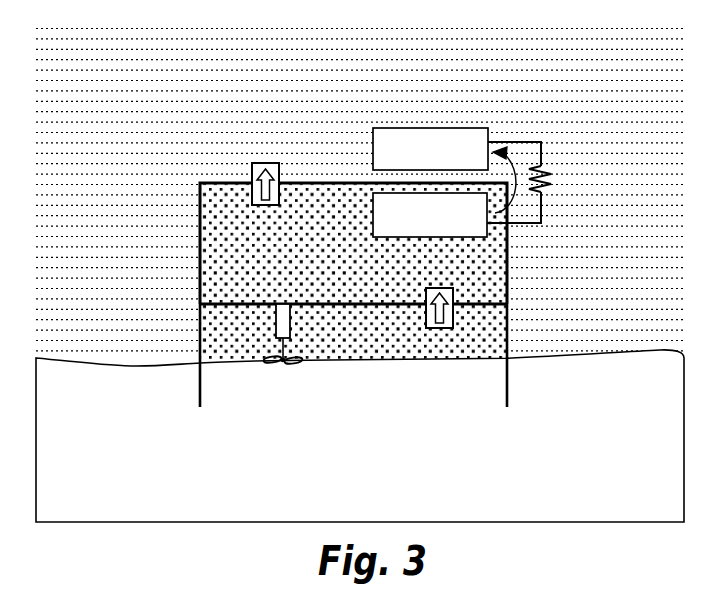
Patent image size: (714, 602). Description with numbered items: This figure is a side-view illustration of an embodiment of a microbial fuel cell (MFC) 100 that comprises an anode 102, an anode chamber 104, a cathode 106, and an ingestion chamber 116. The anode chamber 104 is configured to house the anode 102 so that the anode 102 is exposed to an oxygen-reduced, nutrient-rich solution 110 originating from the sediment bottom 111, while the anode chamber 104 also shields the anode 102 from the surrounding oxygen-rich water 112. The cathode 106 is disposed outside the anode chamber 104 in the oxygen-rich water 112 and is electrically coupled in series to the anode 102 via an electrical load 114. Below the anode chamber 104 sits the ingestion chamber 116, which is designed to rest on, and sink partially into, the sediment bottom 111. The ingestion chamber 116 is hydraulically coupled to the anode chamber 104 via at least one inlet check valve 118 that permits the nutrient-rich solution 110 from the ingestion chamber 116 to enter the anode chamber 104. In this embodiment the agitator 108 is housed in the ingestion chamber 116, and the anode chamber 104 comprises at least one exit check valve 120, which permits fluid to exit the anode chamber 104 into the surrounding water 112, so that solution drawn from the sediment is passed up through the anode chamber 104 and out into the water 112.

The microbial fuel cell 100 is at (567, 104).
The anode 102 is at (373, 222).
The anode chamber 104 is at (181, 185).
The cathode 106 is at (373, 157).
The agitator 108 is at (283, 364).
The nutrient-rich solution 110 is at (383, 347).
The sediment bottom 111 is at (380, 414).
The oxygen-rich water 112 is at (146, 108).
The electrical load 114 is at (553, 170).
The ingestion chamber 116 is at (181, 307).
The inlet check valve 118 is at (426, 292).
The exit check valve 120 is at (252, 177).